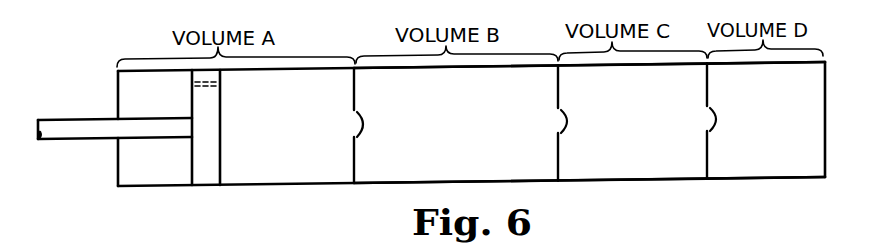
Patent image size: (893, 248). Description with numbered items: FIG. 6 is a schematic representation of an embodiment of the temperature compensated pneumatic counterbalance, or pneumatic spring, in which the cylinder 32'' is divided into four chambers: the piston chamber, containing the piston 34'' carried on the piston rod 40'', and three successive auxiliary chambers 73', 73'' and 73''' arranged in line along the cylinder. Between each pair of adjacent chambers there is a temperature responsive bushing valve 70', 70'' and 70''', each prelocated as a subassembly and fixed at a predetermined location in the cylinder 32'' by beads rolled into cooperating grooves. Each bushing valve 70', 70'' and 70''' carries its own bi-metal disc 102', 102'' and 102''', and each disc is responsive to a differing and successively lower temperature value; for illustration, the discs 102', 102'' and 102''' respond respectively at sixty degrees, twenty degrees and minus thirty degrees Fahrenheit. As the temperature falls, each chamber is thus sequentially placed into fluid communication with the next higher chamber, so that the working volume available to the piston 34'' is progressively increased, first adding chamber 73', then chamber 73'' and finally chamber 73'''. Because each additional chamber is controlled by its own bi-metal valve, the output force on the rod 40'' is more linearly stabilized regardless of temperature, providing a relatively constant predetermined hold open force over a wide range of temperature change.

The cylinder 32'' is at (471, 142).
The piston 34'' is at (169, 146).
The piston rod 40'' is at (113, 149).
The bushing valve 70' is at (324, 125).
The bushing valve 70'' is at (524, 123).
The bushing valve 70''' is at (682, 121).
The bi-metal disc 102' is at (387, 108).
The bi-metal disc 102'' is at (592, 106).
The bi-metal disc 102''' is at (742, 105).
The chamber 73' is at (456, 125).
The chamber 73'' is at (632, 122).
The chamber 73''' is at (766, 120).